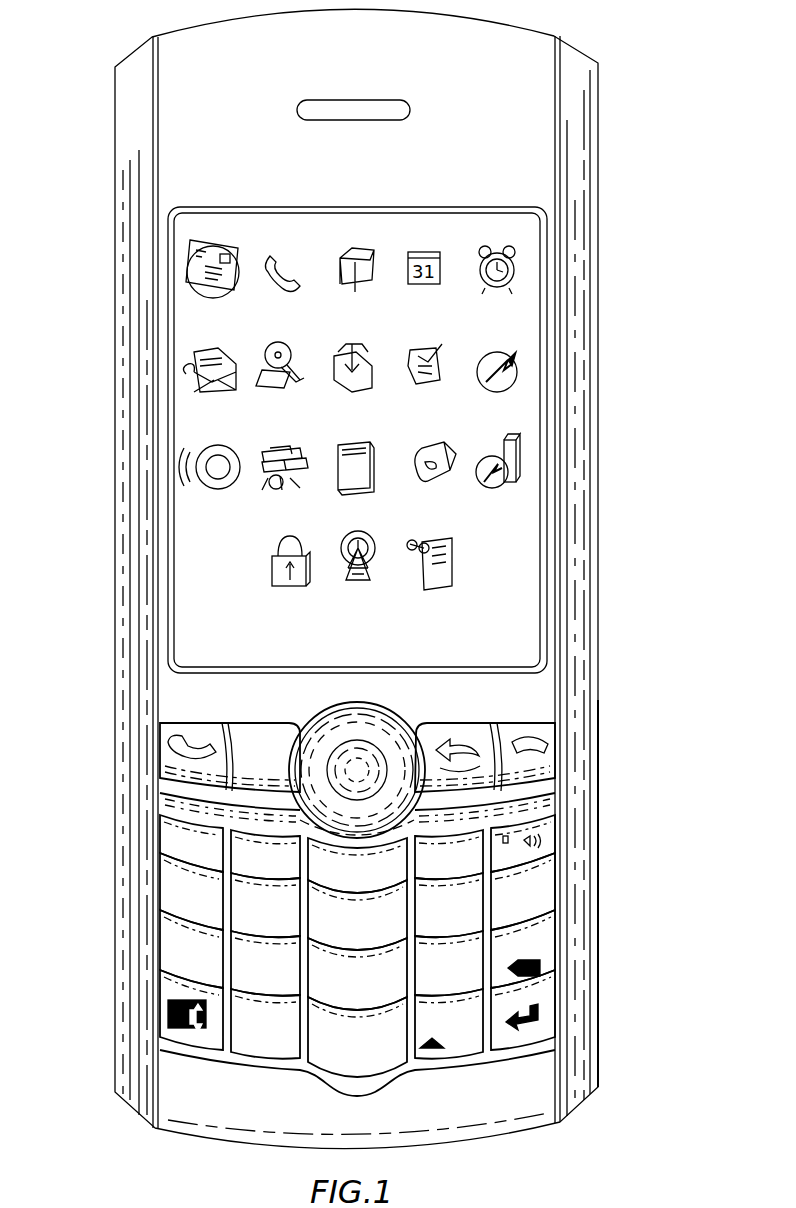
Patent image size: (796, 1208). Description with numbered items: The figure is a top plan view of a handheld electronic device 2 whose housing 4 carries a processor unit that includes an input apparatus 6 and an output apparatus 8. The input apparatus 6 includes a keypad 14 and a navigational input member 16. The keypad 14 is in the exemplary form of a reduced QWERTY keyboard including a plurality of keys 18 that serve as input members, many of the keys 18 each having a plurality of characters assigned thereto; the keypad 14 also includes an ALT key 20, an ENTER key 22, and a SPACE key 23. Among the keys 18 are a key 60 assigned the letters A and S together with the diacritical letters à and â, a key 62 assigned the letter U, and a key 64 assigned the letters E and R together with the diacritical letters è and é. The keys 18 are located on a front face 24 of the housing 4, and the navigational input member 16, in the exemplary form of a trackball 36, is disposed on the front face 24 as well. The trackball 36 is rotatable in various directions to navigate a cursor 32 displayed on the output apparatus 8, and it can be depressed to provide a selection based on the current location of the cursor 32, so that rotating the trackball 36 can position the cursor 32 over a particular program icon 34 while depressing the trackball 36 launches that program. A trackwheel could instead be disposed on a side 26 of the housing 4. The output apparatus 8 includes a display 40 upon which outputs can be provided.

The handheld electronic device 2 is at (633, 63).
The housing 4 is at (600, 812).
The input apparatus 6 is at (280, 725).
The output apparatus 8 is at (522, 523).
The keypad 14 is at (360, 926).
The navigational input member 16 is at (365, 745).
The keys 18 is at (163, 950).
The ALT key 20 is at (173, 1042).
The ENTER key 22 is at (558, 990).
The SPACE key 23 is at (395, 1078).
The front face 24 is at (545, 698).
The side 26 is at (598, 290).
The cursor 32 is at (224, 244).
The program icon 34 is at (212, 285).
The trackball 36 is at (340, 745).
The display 40 is at (527, 595).
The key 60 is at (158, 892).
The key 62 is at (492, 828).
The key 64 is at (220, 830).